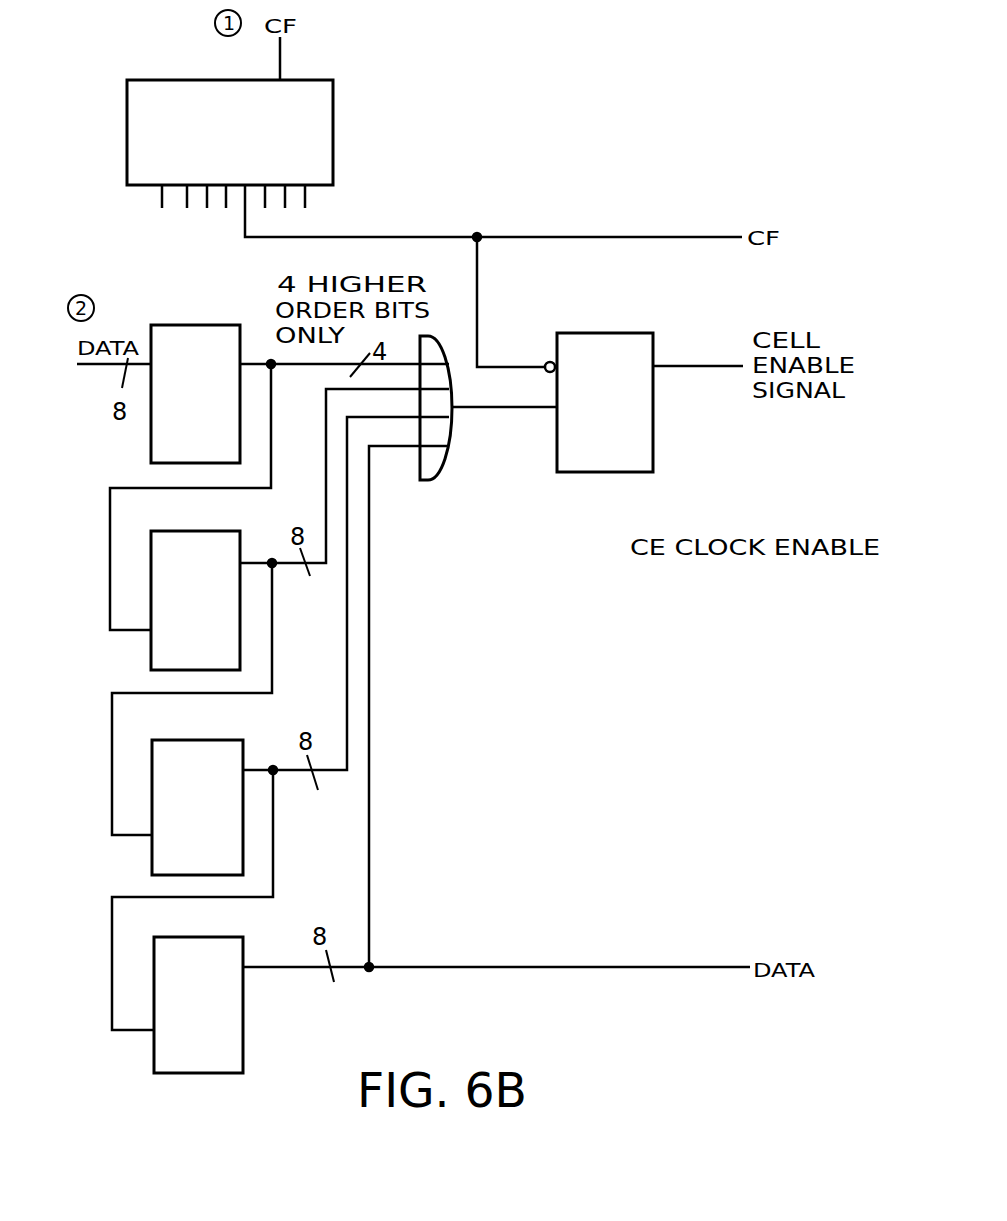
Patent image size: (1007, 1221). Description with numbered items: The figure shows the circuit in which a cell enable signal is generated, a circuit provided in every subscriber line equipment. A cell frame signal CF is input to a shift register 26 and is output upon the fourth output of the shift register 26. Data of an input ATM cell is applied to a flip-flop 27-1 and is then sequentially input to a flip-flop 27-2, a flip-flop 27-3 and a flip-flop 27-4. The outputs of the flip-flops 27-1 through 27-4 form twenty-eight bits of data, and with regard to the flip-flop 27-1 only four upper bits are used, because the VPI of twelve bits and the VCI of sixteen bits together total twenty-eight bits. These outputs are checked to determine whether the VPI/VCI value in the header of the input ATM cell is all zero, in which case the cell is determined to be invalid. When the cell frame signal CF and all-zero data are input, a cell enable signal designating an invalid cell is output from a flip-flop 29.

The shift register 26 is at (178, 80).
The flip-flop 27-1 is at (164, 325).
The flip-flop 27-2 is at (222, 531).
The flip-flop 27-3 is at (224, 740).
The flip-flop 27-4 is at (222, 937).
The flip-flop 29 is at (586, 333).